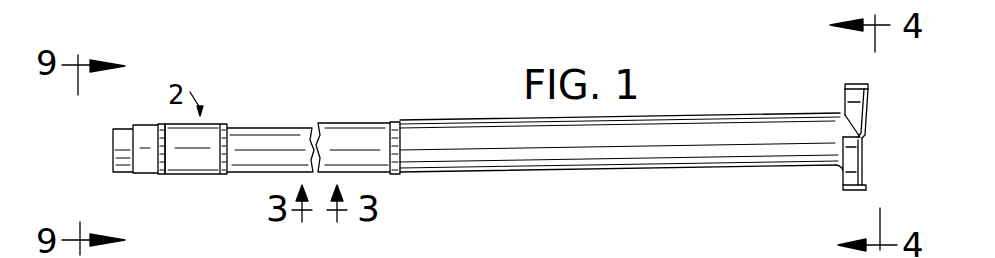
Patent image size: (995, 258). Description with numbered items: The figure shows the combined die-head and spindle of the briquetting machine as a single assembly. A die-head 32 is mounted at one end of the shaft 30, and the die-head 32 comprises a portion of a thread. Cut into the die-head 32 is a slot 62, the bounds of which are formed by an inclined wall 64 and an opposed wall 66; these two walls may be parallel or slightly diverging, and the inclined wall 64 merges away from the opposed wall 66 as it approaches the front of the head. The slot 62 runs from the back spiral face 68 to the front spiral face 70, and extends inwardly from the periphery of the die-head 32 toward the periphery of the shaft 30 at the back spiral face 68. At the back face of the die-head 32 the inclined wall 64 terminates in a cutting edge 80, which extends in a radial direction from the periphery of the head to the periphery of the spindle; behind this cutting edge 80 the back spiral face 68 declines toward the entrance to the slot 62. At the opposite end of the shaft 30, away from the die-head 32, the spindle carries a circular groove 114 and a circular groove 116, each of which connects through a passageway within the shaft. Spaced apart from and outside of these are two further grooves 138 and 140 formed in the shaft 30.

The shaft 30 is at (665, 121).
The die-head 32 is at (845, 88).
The slot 62 is at (862, 142).
The inclined wall 64 is at (842, 128).
The opposed wall 66 is at (861, 138).
The back spiral face 68 is at (843, 188).
The front spiral face 70 is at (863, 185).
The cutting edge 80 is at (842, 113).
The circular groove 114 is at (329, 112).
The circular groove 116 is at (224, 175).
The groove 138 is at (163, 175).
The groove 140 is at (407, 112).